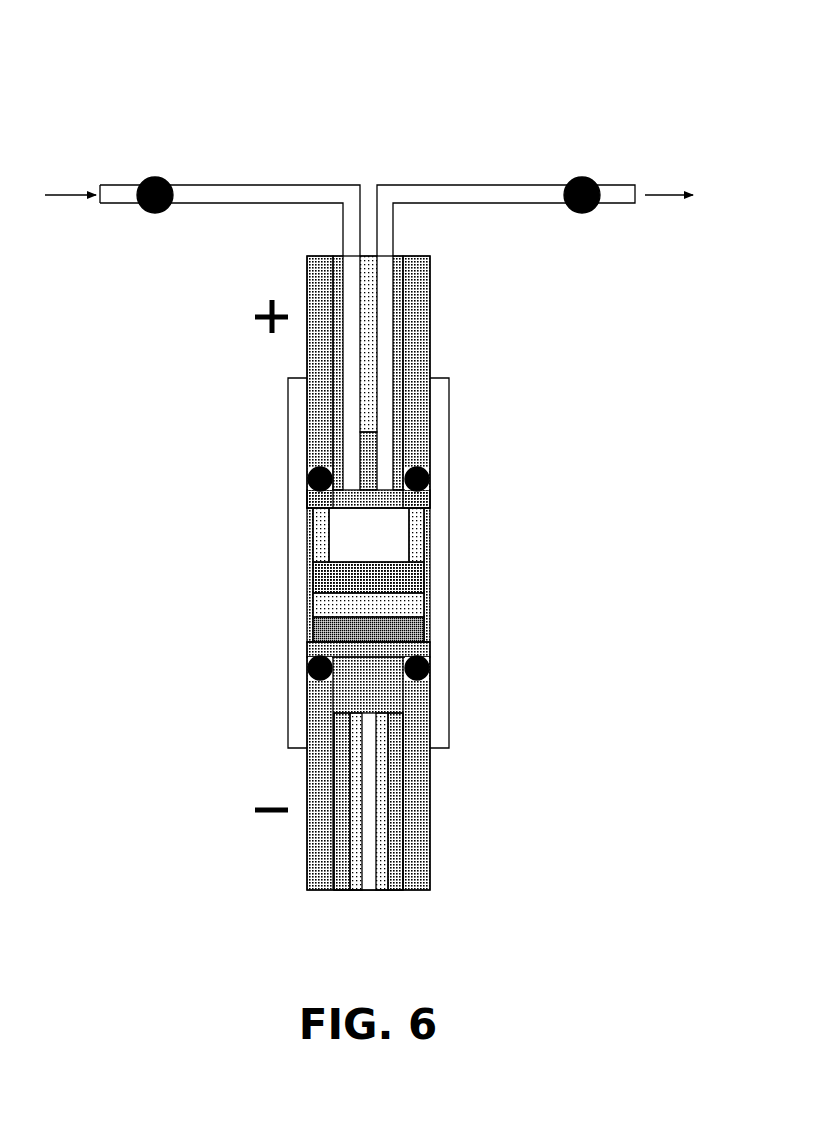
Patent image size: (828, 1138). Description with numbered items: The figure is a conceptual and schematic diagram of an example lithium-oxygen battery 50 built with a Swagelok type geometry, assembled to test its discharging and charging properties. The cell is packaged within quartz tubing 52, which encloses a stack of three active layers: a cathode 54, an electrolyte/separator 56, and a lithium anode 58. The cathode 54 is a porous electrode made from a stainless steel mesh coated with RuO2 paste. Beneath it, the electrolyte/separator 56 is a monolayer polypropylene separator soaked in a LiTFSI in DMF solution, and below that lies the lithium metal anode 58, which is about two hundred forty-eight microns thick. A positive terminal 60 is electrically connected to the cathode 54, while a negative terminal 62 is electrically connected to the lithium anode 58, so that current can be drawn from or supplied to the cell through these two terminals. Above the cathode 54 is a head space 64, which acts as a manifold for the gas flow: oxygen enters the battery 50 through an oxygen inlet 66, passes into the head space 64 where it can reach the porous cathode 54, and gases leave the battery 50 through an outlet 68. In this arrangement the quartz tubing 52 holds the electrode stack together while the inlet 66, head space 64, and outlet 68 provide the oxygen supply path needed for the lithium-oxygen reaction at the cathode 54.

The lithium-oxygen battery 50 is at (198, 72).
The quartz tubing 52 is at (298, 447).
The cathode 54 is at (313, 576).
The electrolyte/separator 56 is at (412, 604).
The lithium anode 58 is at (313, 630).
The positive terminal 60 is at (318, 353).
The negative terminal 62 is at (320, 866).
The head space 64 is at (388, 538).
The oxygen inlet 66 is at (118, 195).
The outlet 68 is at (617, 195).